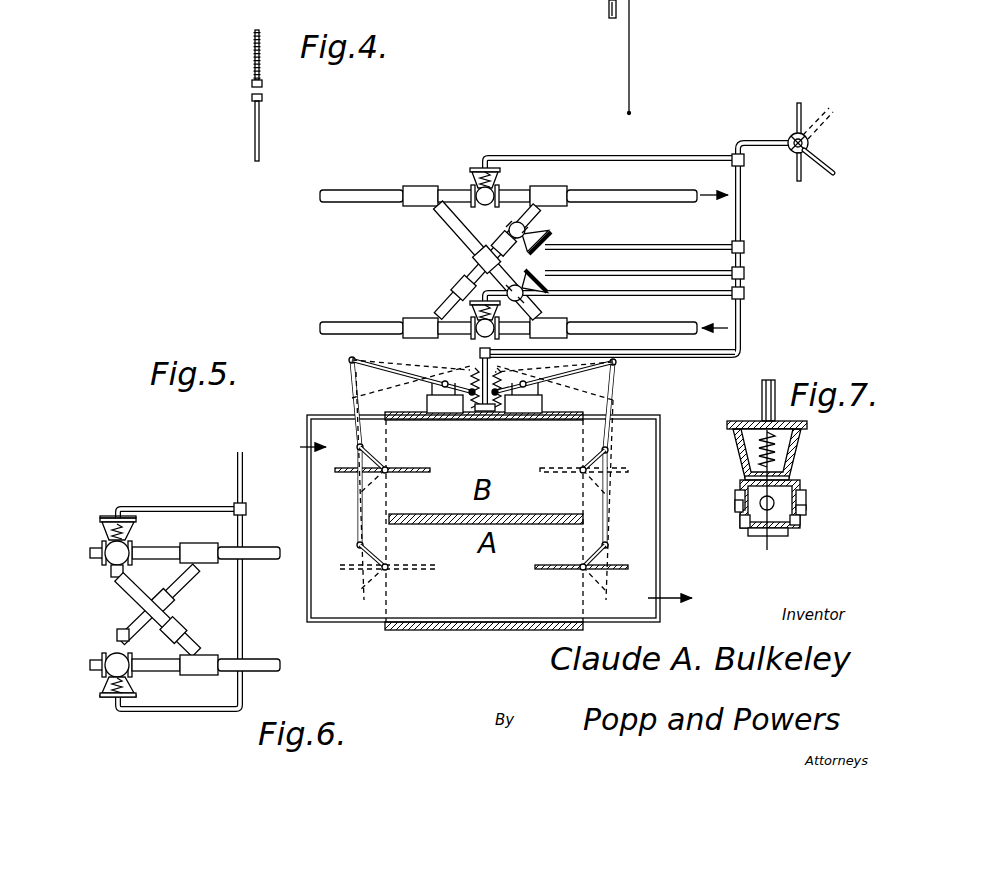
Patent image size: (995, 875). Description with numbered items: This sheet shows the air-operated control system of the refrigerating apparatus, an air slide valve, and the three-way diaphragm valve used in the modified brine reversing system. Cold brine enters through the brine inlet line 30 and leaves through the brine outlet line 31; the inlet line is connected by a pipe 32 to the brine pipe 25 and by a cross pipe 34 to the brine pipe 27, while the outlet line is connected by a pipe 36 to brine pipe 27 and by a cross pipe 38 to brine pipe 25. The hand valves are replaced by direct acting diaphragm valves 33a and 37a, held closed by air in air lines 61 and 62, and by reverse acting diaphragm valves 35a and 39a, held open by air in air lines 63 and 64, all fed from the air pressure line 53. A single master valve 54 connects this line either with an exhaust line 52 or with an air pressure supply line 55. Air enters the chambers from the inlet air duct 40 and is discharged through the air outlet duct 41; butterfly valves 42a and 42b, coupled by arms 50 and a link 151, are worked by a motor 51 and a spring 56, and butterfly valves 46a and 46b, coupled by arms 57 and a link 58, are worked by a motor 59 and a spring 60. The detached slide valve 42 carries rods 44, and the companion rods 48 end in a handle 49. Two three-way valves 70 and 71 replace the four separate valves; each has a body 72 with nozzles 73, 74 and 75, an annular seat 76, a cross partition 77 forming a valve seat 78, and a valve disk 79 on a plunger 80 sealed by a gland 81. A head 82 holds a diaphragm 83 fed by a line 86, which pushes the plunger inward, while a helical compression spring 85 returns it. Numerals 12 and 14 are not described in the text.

In FIG. 6, the tank / container 12 is at (566, 420).
In FIG. 6, the partition 14 is at (508, 524).
In FIG. 4, the brine pipe 25 is at (322, 322).
In FIG. 5, the brine pipe 25 is at (282, 666).
In FIG. 4, the brine pipe 27 is at (330, 180).
In FIG. 5, the brine pipe 27 is at (265, 547).
In FIG. 4, the brine inlet line 30 is at (697, 333).
In FIG. 5, the brine inlet line 30 is at (104, 656).
In FIG. 4, the brine outlet line 31 is at (690, 202).
In FIG. 5, the brine outlet line 31 is at (104, 562).
In FIG. 4, the pipe 32 is at (455, 322).
In FIG. 5, the pipe 32 is at (190, 598).
In FIG. 4, the direct acting diaphragm valve 33a is at (470, 304).
In FIG. 4, the cross pipe 34 is at (458, 226).
In FIG. 5, the cross pipe 34 is at (166, 630).
In FIG. 4, the reverse acting diaphragm valve 35a is at (541, 273).
In FIG. 4, the pipe 36 is at (525, 185).
In FIG. 5, the pipe 36 is at (195, 545).
In FIG. 4, the direct acting diaphragm valve 37a is at (470, 170).
In FIG. 4, the cross pipe 38 is at (498, 240).
In FIG. 5, the cross pipe 38 is at (174, 604).
In FIG. 4, the reverse acting diaphragm valve 39a is at (549, 237).
In FIG. 6, the inlet air duct 40 is at (480, 518).
In FIG. 6, the air outlet duct 41 is at (655, 600).
In FIG. 4, the slide valve 42 is at (257, 30).
In FIG. 6, the butterfly valve 42a is at (389, 608).
In FIG. 6, the butterfly valve 42b is at (415, 473).
In FIG. 4, the bars or rods 44 is at (259, 120).
In FIG. 6, the butterfly valve 46a is at (552, 570).
In FIG. 6, the butterfly valve 46b is at (582, 503).
In FIG. 4, the bars or rods 48 is at (630, 55).
In FIG. 4, the handle 49 is at (630, 112).
In FIG. 6, the arms 50 is at (358, 452).
In FIG. 6, the motor 51 is at (437, 412).
In FIG. 4, the exhaust line 52 is at (800, 110).
In FIG. 4, the air pressure line 53 is at (742, 357).
In FIG. 4, the master valve 54 is at (810, 144).
In FIG. 4, the air pressure supply line 55 is at (800, 181).
In FIG. 6, the spring 56 is at (470, 406).
In FIG. 6, the arms 57 is at (608, 452).
In FIG. 6, the link 58 is at (608, 508).
In FIG. 6, the motor 59 is at (527, 408).
In FIG. 6, the spring 60 is at (487, 414).
In FIG. 4, the air line 61 is at (680, 297).
In FIG. 4, the air line 62 is at (661, 153).
In FIG. 4, the air line 63 is at (664, 266).
In FIG. 4, the air line 64 is at (664, 240).
In FIG. 5, the three-way valve 70 is at (175, 537).
In FIG. 5, the three-way valve 71 is at (142, 672).
In FIG. 7, the body 72 is at (737, 525).
In FIG. 5, the nozzle 73 is at (104, 546).
In FIG. 7, the nozzle 73 is at (737, 510).
In FIG. 5, the nozzle 74 is at (126, 568).
In FIG. 7, the nozzle 74 is at (755, 533).
In FIG. 5, the nozzle 75 is at (135, 538).
In FIG. 7, the nozzle 75 is at (795, 521).
In FIG. 7, the annular seat 76 is at (745, 505).
In FIG. 7, the cross partition 77 is at (806, 512).
In FIG. 7, the valve seat 78 is at (805, 494).
In FIG. 5, the valve disk or head 79 is at (124, 628).
In FIG. 7, the valve disk or head 79 is at (767, 548).
In FIG. 5, the plunger 80 is at (122, 544).
In FIG. 7, the plunger 80 is at (742, 490).
In FIG. 7, the gland or stuffing box 81 is at (748, 478).
In FIG. 5, the head 82 is at (120, 517).
In FIG. 7, the head 82 is at (800, 445).
In FIG. 7, the diaphragm 83 is at (735, 433).
In FIG. 5, the helical compression spring 85 is at (121, 699).
In FIG. 7, the helical compression spring 85 is at (780, 455).
In FIG. 5, the line 86 is at (242, 455).
In FIG. 7, the line 86 is at (760, 393).
In FIG. 6, the link 151 is at (356, 521).